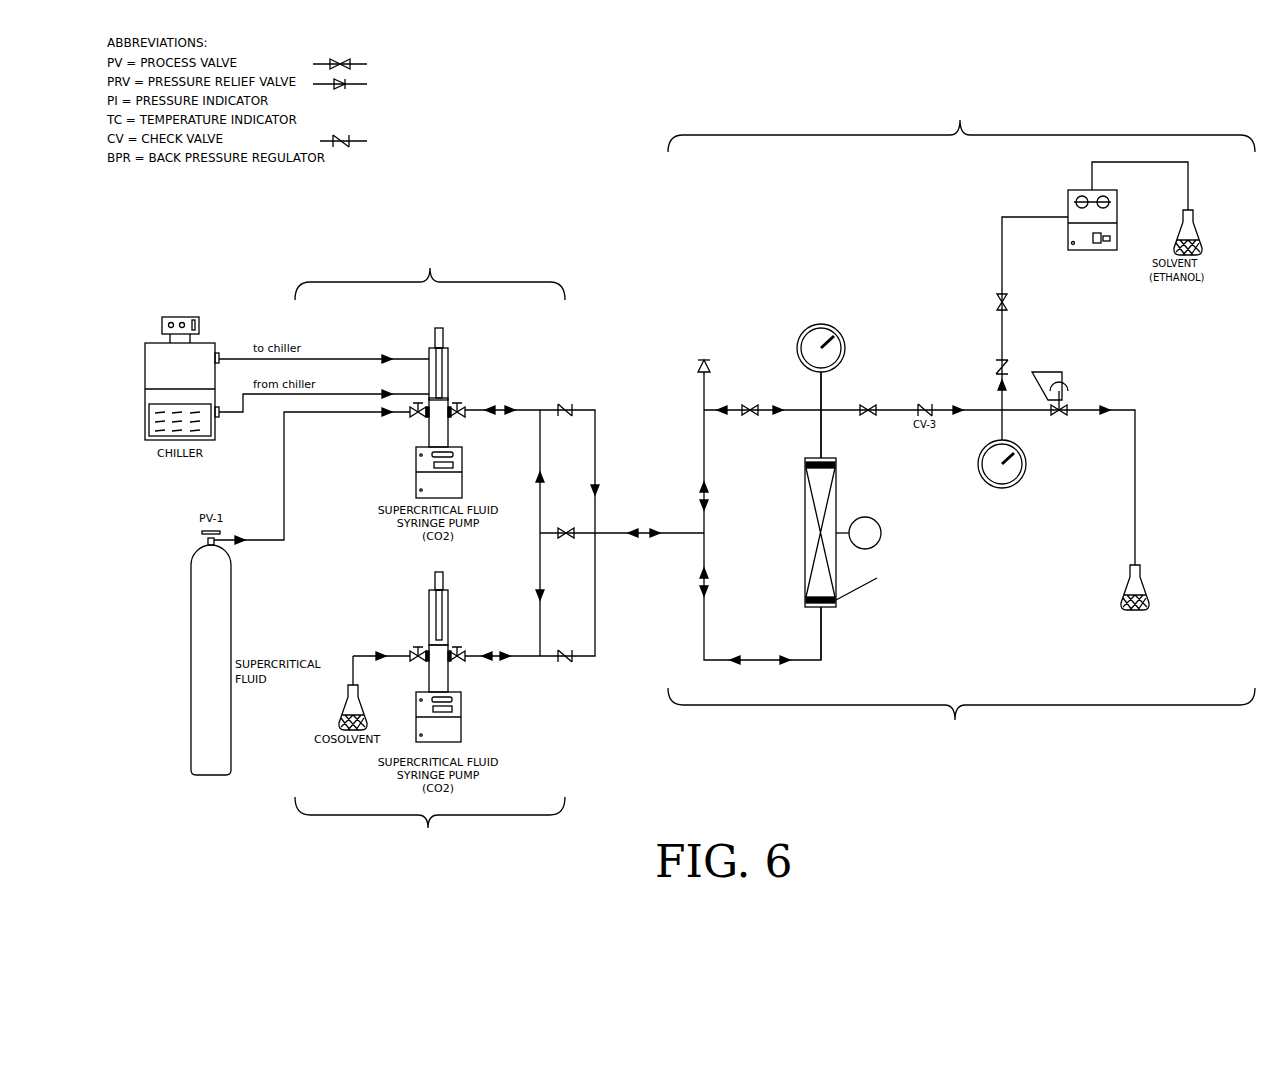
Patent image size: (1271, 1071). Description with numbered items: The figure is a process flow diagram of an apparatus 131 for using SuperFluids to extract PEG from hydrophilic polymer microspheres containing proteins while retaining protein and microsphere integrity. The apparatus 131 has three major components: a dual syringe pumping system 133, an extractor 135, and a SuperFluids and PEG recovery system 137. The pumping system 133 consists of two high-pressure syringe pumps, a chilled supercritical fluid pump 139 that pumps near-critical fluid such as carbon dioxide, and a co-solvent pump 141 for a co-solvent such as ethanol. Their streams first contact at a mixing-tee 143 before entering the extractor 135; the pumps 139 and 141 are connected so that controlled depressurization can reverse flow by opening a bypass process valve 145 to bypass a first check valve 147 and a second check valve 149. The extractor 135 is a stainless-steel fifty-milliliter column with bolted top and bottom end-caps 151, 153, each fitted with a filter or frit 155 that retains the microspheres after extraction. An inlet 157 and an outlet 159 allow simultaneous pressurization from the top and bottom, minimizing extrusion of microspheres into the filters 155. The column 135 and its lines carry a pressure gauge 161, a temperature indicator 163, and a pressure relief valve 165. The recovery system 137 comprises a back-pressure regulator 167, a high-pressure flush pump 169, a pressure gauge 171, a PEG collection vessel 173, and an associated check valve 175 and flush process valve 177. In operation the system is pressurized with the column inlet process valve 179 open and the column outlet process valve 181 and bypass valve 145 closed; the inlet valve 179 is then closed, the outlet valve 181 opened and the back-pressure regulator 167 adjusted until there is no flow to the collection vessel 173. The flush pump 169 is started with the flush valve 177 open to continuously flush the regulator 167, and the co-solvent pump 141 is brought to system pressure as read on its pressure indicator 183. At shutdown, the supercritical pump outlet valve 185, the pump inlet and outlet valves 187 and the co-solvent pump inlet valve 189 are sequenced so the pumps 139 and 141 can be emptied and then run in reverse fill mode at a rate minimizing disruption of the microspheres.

The apparatus 131 is at (568, 150).
The dual syringe pumping system 133 is at (430, 555).
The extractor 135 is at (804, 550).
The SuperFluids and PEG recovery system 137 is at (961, 426).
The supercritical fluid syringe pump 139 is at (416, 470).
The co-solvent syringe pump 141 is at (461, 702).
The mixing-tee 143 is at (597, 535).
The process valve PV-6 145 is at (566, 538).
The check valve CV-1 147 is at (579, 423).
The check valve CV-2 149 is at (565, 664).
The top end-cap 151 is at (838, 465).
The bottom end-cap 153 is at (836, 604).
The 0.2-micron filter or SS frit 155 is at (838, 601).
The inlet 157 is at (818, 458).
The outlet 159 is at (806, 616).
The pressure gauge 161 is at (808, 330).
The temperature indicator 163 is at (881, 528).
The pressure relief valve 165 is at (704, 356).
The back-pressure regulator BPR-1 167 is at (1063, 398).
The BPR high-pressure flush pump 169 is at (1068, 203).
The pressure gauge 171 is at (1006, 489).
The PEG collection vessel 173 is at (1149, 591).
The check valve 175 is at (1007, 371).
The process valve PV-9 177 is at (1007, 301).
The process valve PV-7 179 is at (752, 404).
The process valve PV-8 181 is at (871, 404).
The pressure indicator PI-2 183 is at (461, 735).
The process valve PV-3 185 is at (482, 388).
The process valves PV-2 and PV-5 187 is at (413, 423).
The process valve PV-4 189 is at (417, 648).